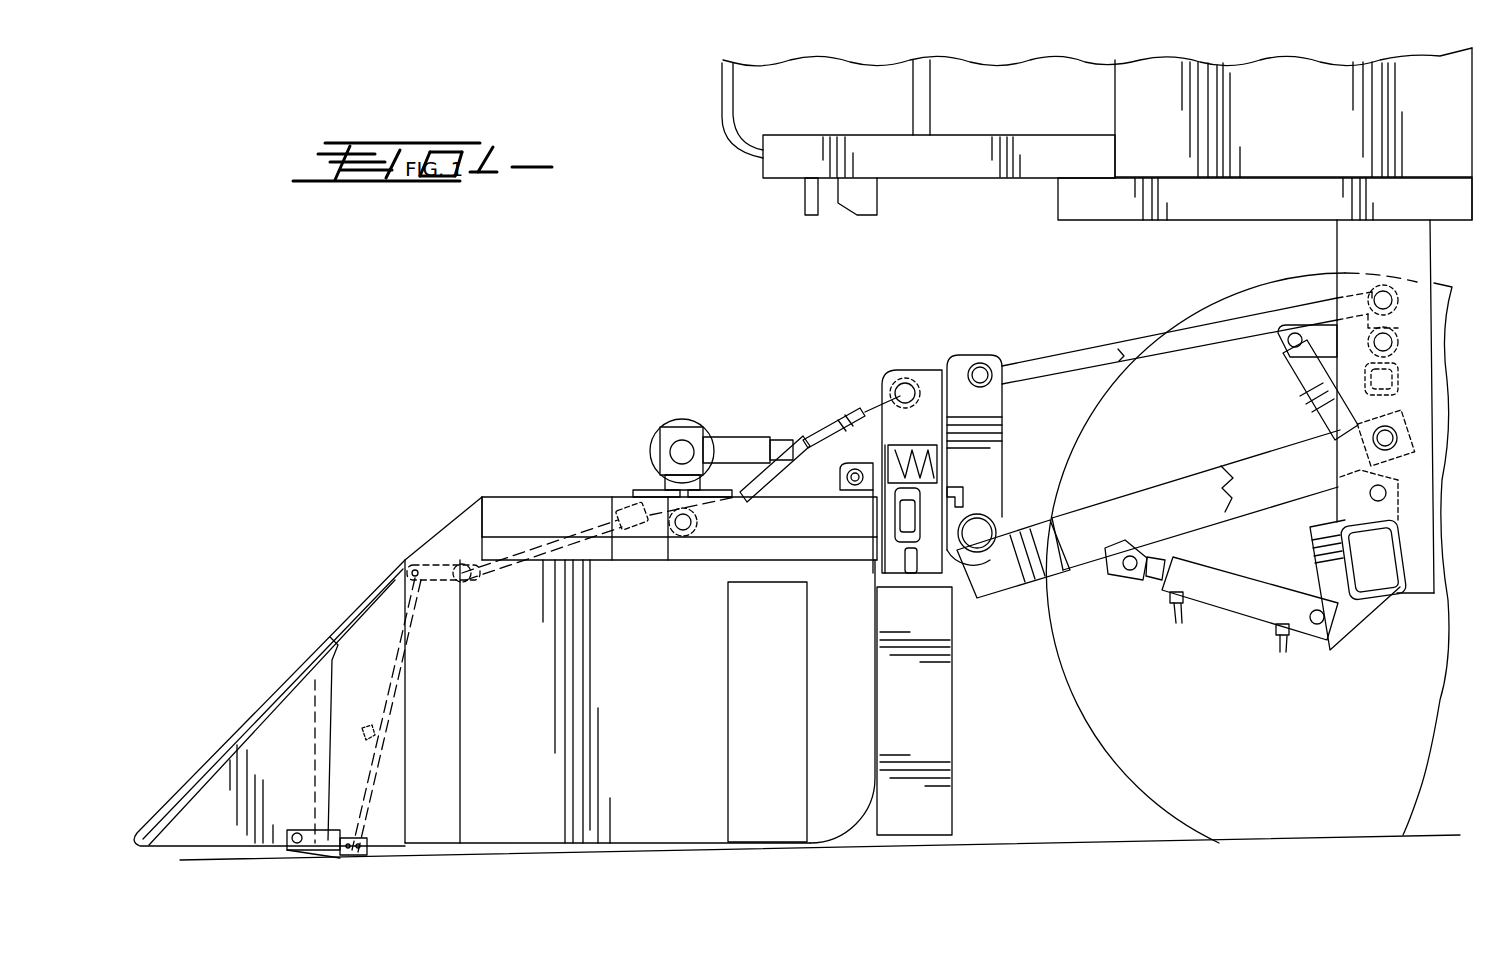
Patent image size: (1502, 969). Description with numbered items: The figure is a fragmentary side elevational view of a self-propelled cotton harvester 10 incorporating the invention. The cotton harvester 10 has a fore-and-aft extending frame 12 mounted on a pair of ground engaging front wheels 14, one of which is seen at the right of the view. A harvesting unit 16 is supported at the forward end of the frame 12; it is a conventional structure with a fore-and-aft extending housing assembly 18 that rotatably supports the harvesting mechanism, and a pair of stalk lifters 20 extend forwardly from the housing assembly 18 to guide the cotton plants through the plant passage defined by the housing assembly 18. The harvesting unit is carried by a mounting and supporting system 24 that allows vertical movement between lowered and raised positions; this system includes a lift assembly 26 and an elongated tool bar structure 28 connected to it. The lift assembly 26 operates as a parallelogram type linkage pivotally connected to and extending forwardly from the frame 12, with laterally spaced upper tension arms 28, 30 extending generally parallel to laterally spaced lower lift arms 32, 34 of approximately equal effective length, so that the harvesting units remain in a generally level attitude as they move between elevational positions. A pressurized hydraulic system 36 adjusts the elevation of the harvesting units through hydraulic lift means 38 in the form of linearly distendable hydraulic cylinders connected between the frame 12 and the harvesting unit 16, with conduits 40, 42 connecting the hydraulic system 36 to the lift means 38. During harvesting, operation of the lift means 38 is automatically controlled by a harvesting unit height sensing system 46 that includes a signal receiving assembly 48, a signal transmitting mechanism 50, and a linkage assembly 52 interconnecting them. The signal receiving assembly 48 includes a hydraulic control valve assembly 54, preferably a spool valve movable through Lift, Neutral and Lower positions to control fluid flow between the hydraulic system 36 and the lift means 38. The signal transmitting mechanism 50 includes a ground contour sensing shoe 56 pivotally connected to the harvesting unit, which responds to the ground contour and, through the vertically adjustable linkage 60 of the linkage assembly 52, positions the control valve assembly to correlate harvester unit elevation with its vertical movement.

The cotton harvester 10 is at (845, 285).
The frame 12 is at (1223, 210).
The front wheels 14 is at (1110, 745).
The harvesting unit 16 is at (542, 488).
The housing assembly 18 is at (497, 503).
The stalk lifters 20 is at (275, 727).
The mounting and supporting system 24 is at (913, 577).
The lift assembly 26 is at (1113, 490).
The tool bar structure 28 is at (877, 568).
The upper tension arm 30 is at (1060, 359).
The lower lift arm 32 is at (1267, 458).
The lower lift arm 34 is at (1180, 515).
The pressurized hydraulic system 36 is at (1265, 663).
The hydraulic lift means 38 is at (1250, 628).
The conduit 40 is at (1290, 655).
The conduit 42 is at (1172, 615).
The harvesting unit height sensing system 46 is at (440, 560).
The signal receiving assembly 48 is at (622, 497).
The signal transmitting mechanism 50 is at (320, 856).
The linkage assembly 52 is at (358, 660).
The hydraulic control valve assembly 54 is at (640, 513).
The ground contour sensing shoe 56 is at (367, 855).
The vertically adjustable linkage 60 is at (402, 690).